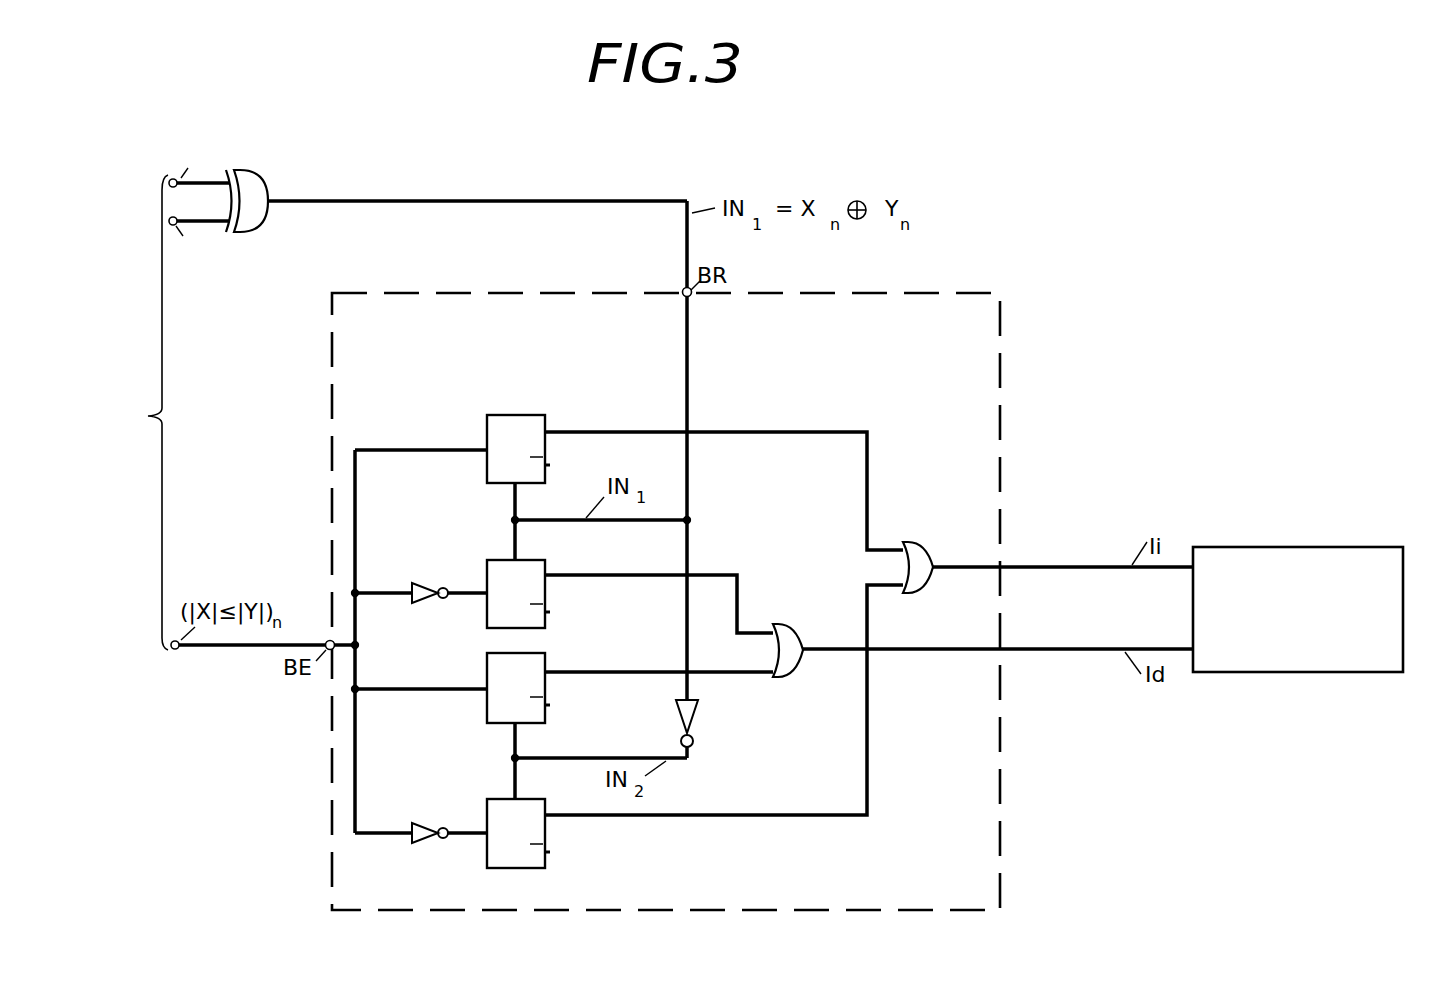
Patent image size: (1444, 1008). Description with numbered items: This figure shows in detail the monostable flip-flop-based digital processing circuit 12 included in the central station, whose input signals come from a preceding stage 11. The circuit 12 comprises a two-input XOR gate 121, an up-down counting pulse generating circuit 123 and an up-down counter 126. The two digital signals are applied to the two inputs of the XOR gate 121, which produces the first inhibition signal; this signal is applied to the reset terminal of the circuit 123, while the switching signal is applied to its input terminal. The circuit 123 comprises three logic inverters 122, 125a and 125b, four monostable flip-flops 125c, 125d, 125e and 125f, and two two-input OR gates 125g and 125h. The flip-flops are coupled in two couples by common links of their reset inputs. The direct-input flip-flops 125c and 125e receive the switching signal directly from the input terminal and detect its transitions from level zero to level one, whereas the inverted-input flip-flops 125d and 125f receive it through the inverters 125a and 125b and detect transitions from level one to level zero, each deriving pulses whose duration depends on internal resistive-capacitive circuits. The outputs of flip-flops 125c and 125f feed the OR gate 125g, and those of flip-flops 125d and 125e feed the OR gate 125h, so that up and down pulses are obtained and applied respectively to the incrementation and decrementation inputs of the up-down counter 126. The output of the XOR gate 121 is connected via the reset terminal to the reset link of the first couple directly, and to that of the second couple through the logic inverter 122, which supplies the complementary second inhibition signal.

The preceding circuit (source of Xn, Yn, comparison signal) 11 is at (127, 412).
The digital processing circuit 12 is at (1053, 145).
The two-input XOR gate 121 is at (254, 191).
The logic inverter 122 is at (690, 727).
The up-down counting pulse generating circuit 123 is at (975, 304).
The logic inverter 125a is at (437, 569).
The logic inverter 125b is at (437, 809).
The first monostable flip-flop 125c is at (487, 480).
The second monostable flip-flop 125d is at (545, 625).
The first monostable flip-flop 125e is at (545, 720).
The second monostable flip-flop 125f is at (545, 866).
The two-input OR gate 125g is at (921, 584).
The two-input OR gate 125h is at (806, 620).
The up-down counter 126 is at (1327, 667).